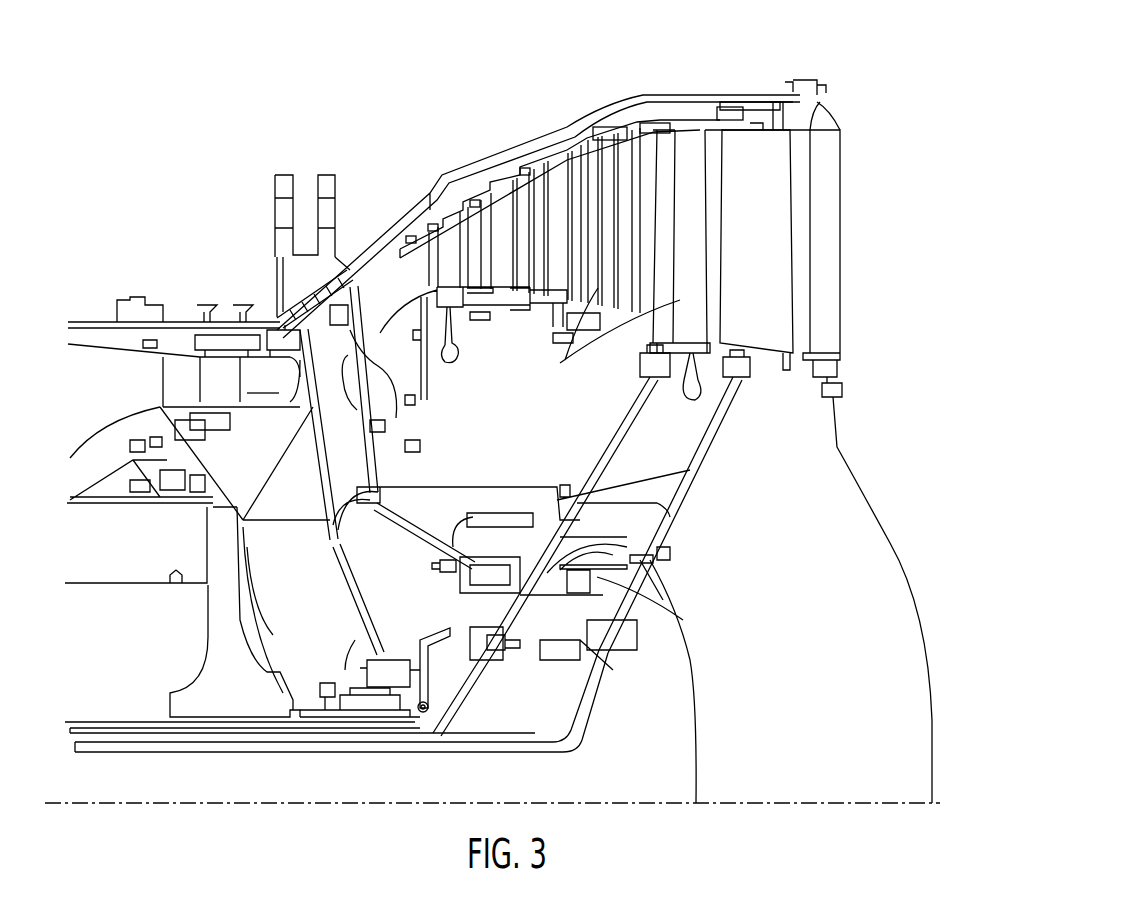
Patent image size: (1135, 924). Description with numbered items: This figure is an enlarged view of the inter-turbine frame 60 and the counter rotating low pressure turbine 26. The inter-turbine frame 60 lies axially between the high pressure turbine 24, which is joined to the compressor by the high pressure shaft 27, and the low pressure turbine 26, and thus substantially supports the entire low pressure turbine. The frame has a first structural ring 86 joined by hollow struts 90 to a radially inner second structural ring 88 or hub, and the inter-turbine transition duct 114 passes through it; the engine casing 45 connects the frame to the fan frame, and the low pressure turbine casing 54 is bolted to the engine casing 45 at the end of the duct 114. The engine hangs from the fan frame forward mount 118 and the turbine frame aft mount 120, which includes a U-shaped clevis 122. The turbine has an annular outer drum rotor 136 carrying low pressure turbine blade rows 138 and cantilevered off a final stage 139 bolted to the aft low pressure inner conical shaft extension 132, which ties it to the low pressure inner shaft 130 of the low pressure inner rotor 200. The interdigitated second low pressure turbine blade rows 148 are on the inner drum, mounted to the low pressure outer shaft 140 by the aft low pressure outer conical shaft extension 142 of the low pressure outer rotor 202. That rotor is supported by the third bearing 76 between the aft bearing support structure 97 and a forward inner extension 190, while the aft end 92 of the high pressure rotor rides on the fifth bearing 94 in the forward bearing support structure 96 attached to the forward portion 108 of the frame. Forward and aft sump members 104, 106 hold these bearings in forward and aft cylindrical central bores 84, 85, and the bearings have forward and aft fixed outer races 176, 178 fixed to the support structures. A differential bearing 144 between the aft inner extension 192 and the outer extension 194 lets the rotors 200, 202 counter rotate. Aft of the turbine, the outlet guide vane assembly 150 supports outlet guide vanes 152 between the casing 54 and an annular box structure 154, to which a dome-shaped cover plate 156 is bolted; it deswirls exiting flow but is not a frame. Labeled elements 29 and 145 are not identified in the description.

The high pressure turbine 24 is at (222, 373).
The counter rotating low pressure turbine 26 is at (792, 62).
The high pressure shaft 27 is at (107, 583).
The bearing 29 is at (140, 587).
The engine casing 45 is at (180, 320).
The low pressure turbine casing 54 is at (757, 90).
The inter-turbine frame 60 is at (317, 463).
The third bearing 76 is at (470, 598).
The forward cylindrical central bore 84 is at (325, 690).
The aft cylindrical central bore 85 is at (460, 568).
The first structural ring 86 is at (300, 336).
The second structural ring 88 is at (347, 507).
The struts 90 is at (368, 420).
The aft end of the high pressure rotor 92 is at (403, 713).
The fifth bearing 94 is at (428, 712).
The forward bearing support structure 96 is at (350, 607).
The aft bearing support structure 97 is at (457, 523).
The forward sump member 104 is at (367, 667).
The aft sump member 106 is at (470, 512).
The forward portion of the inter-turbine frame 108 is at (327, 547).
The inter-turbine transition duct 114 is at (367, 303).
The fan frame forward mount 118 is at (403, 503).
The turbine frame aft mount 120 is at (278, 248).
The U-shaped clevis 122 is at (317, 192).
The low pressure inner shaft 130 is at (527, 752).
The aft low pressure inner conical shaft extension 132 is at (706, 455).
The annular outer drum rotor 136 is at (480, 185).
The low pressure turbine blade rows 138 is at (558, 197).
The final stage 139 is at (790, 200).
The low pressure outer shaft 140 is at (130, 733).
The aft low pressure outer conical shaft extension 142 is at (622, 420).
The differential bearing 144 is at (670, 608).
The vane support 145 is at (620, 350).
The second low pressure turbine blade rows 148 is at (640, 305).
The outlet guide vane assembly 150 is at (882, 222).
The outlet guide vanes 152 is at (840, 243).
The annular box structure 154 is at (835, 368).
The dome-shaped cover plate 156 is at (893, 542).
The forward fixed outer race 176 is at (353, 642).
The aft fixed outer race 178 is at (482, 570).
The forward inner extension 190 is at (503, 605).
The aft inner extension 192 is at (672, 553).
The outer extension 194 is at (657, 603).
The low pressure inner rotor 200 is at (207, 747).
The low pressure outer rotor 202 is at (257, 740).